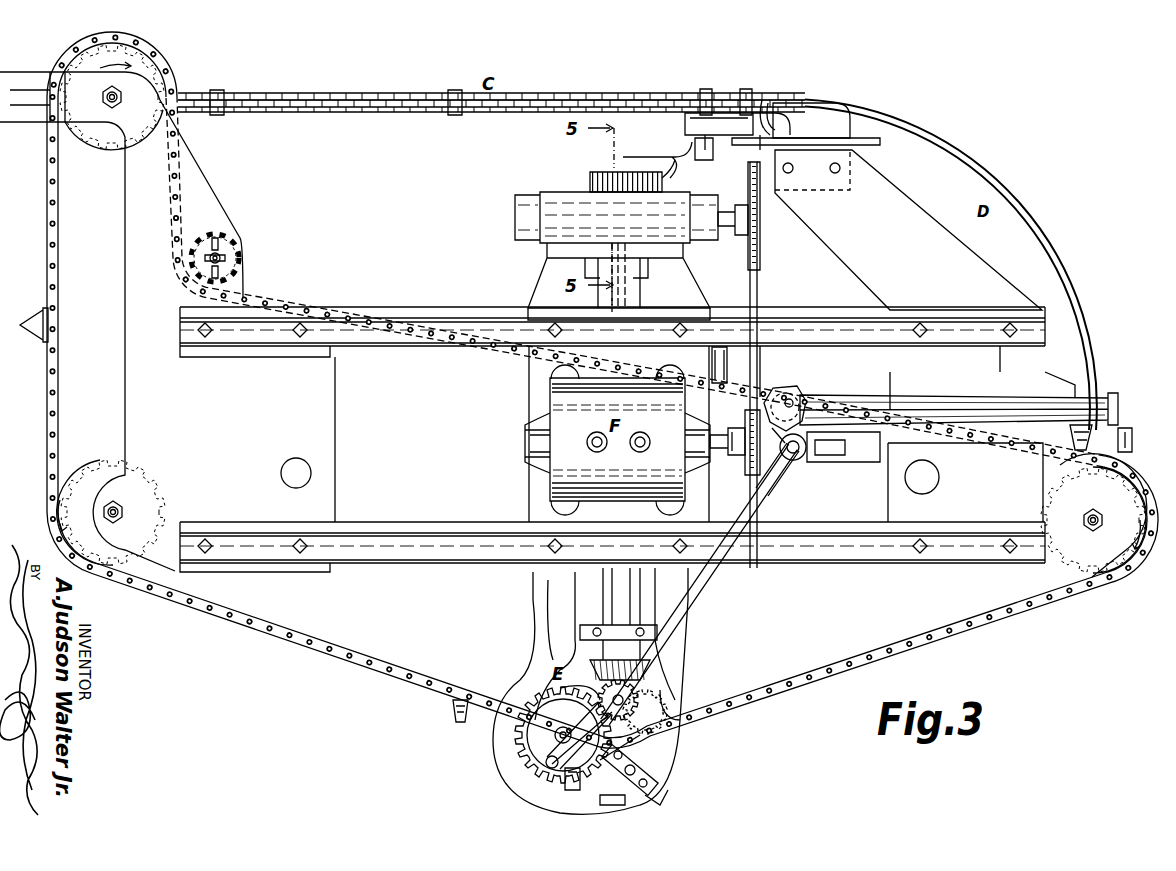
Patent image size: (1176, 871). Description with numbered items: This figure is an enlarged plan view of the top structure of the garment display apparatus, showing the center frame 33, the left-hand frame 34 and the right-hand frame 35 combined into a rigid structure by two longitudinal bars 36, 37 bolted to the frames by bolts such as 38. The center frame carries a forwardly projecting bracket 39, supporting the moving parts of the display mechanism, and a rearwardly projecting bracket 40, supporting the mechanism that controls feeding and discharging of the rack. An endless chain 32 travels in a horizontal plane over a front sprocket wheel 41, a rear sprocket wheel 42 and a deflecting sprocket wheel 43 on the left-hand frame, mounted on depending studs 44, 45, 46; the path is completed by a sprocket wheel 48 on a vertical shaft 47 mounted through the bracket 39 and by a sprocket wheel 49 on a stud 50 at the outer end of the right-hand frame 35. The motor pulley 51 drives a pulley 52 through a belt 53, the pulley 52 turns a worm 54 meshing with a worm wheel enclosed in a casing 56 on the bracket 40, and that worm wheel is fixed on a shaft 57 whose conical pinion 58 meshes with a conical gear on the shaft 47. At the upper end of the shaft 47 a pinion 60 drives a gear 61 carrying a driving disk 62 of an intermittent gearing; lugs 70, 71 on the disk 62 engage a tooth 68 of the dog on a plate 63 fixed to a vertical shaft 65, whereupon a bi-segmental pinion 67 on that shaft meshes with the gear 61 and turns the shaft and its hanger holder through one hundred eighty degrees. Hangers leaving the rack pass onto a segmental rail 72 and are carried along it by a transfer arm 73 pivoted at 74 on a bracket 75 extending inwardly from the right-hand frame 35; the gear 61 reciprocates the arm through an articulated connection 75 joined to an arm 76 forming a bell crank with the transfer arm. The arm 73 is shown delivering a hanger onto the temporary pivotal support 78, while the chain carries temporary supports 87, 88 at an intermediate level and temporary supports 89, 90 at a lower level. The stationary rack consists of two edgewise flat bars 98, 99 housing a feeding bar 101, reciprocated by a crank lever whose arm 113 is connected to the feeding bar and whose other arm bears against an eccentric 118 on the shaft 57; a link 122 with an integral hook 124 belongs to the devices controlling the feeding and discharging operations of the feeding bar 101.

The endless chain 32 is at (300, 640).
The center frame 33 is at (529, 374).
The left-hand frame 34 is at (336, 440).
The right-hand frame 35 is at (890, 474).
The longitudinal bar 36 is at (402, 340).
The longitudinal bar 37 is at (420, 536).
The bolt 38 is at (299, 337).
The forwardly projecting bracket 39 is at (541, 607).
The rearwardly projecting bracket 40 is at (546, 270).
The front sprocket wheel 41 is at (103, 459).
The rear sprocket wheel 42 is at (107, 146).
The deflecting sprocket wheel 43 is at (243, 252).
The stud 44 is at (138, 507).
The stud 45 is at (122, 101).
The stud 46 is at (222, 259).
The vertical shaft 47 is at (637, 698).
The sprocket wheel 48 is at (662, 712).
The sprocket wheel 49 is at (1115, 572).
The stud 50 is at (1092, 510).
The pulley 51 is at (748, 466).
The pulley 52 is at (776, 256).
The belt 53 is at (760, 306).
The worm 54 is at (731, 230).
The casing 56 is at (569, 192).
The shaft 57 is at (624, 296).
The conical pinion 58 is at (656, 636).
The pinion 60 is at (650, 672).
The gear 61 is at (531, 690).
The driving disk 62 is at (540, 738).
The plate 63 is at (648, 796).
The vertical shaft 65 is at (650, 784).
The bi-segmental pinion 67 is at (608, 804).
The tooth 68 is at (636, 770).
The lug 70 is at (569, 786).
The lug 71 is at (640, 745).
The segmental rail 72 is at (994, 160).
The transfer arm 73 is at (975, 389).
The pivot 74 is at (782, 399).
The articulated connection 75 is at (830, 386).
The arm 76 is at (797, 456).
The temporary pivotal support 78 is at (1074, 436).
The temporary support 87 is at (455, 706).
The temporary support 88 is at (490, 316).
The temporary support 89 is at (1125, 430).
The temporary support 90 is at (38, 323).
The flat bar 98 is at (311, 94).
The flat bar 99 is at (331, 108).
The feeding bar 101 is at (292, 107).
The arm 113 is at (661, 157).
The eccentric 118 is at (601, 172).
The link 122 is at (878, 143).
The hook 124 is at (770, 88).